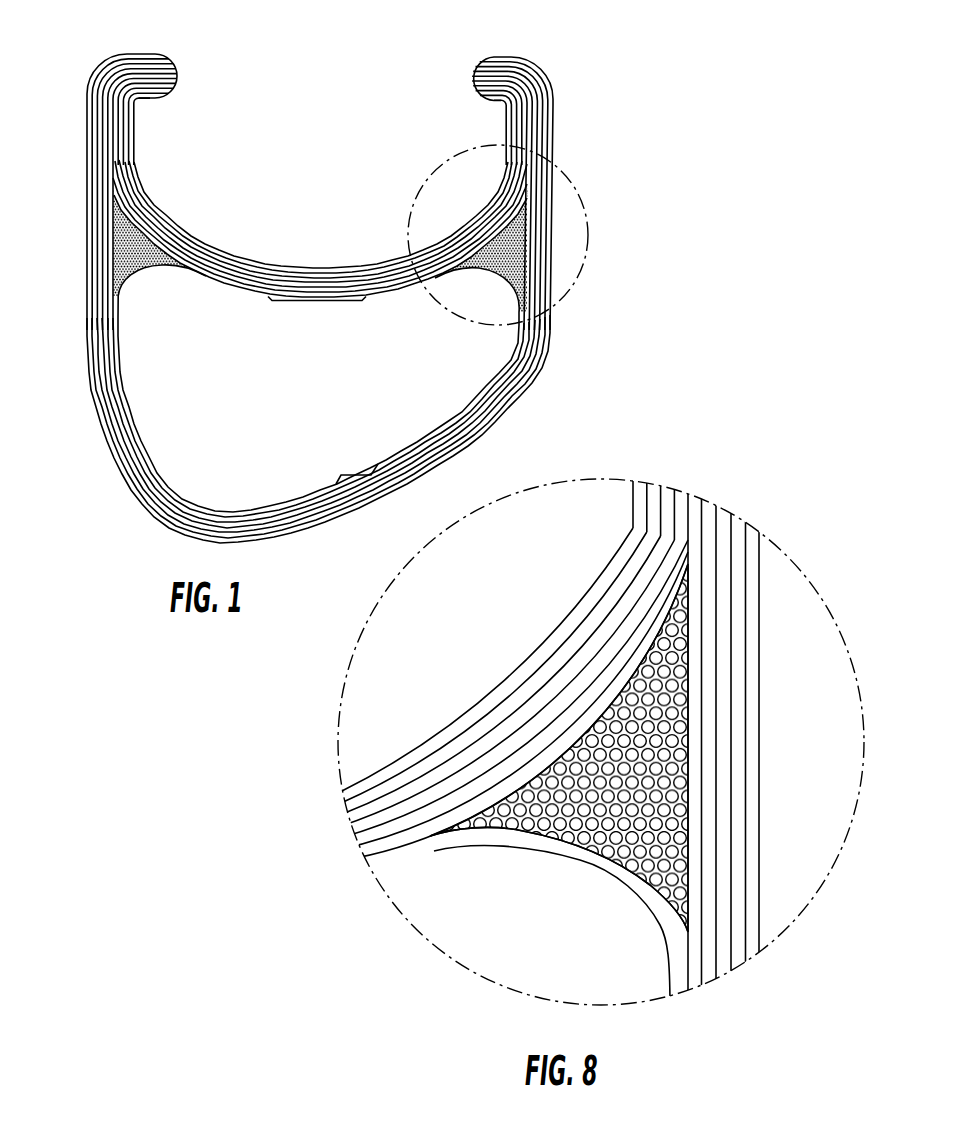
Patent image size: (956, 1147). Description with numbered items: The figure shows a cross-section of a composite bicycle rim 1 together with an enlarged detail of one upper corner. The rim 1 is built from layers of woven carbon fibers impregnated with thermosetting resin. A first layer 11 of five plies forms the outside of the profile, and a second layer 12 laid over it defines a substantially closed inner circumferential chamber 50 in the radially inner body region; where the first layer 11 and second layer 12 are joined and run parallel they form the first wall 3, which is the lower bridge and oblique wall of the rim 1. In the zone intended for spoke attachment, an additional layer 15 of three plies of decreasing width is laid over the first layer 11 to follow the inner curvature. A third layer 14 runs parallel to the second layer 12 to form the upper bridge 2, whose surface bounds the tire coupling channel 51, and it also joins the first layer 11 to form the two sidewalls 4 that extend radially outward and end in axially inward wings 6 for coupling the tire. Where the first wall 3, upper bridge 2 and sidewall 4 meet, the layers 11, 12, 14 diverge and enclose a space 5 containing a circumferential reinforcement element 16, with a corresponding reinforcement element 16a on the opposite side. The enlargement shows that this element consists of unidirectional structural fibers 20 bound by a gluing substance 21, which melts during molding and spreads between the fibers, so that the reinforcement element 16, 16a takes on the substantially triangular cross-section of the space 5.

In FIG. 1, the bicycle rim 1 is at (636, 82).
In FIG. 1, the upper bridge 2 is at (322, 268).
In FIG. 8, the upper bridge 2 is at (358, 760).
In FIG. 1, the first wall 3 is at (153, 517).
In FIG. 1, the sidewall 4 is at (87, 100).
In FIG. 1, the space 5 is at (112, 213).
In FIG. 8, the space 5 is at (663, 737).
In FIG. 1, the wing 6 is at (147, 53).
In FIG. 8, the wing 6 is at (626, 512).
In FIG. 1, the first layer 11 is at (105, 143).
In FIG. 8, the first layer 11 is at (738, 772).
In FIG. 1, the second layer 12 is at (138, 283).
In FIG. 8, the second layer 12 is at (633, 892).
In FIG. 1, the third layer 14 is at (163, 213).
In FIG. 8, the third layer 14 is at (550, 673).
In FIG. 1, the additional layer 15 is at (257, 510).
In FIG. 1, the reinforcement element 16 is at (112, 240).
In FIG. 1, the reinforcement element 16a is at (527, 233).
In FIG. 8, the reinforcement element 16a is at (678, 690).
In FIG. 8, the unidirectional structural fibers 20 is at (582, 852).
In FIG. 8, the gluing substance 21 is at (522, 817).
In FIG. 1, the closed chamber 50 is at (363, 384).
In FIG. 8, the closed chamber 50 is at (548, 947).
In FIG. 1, the tire coupling channel 51 is at (316, 187).
In FIG. 8, the tire coupling channel 51 is at (445, 664).